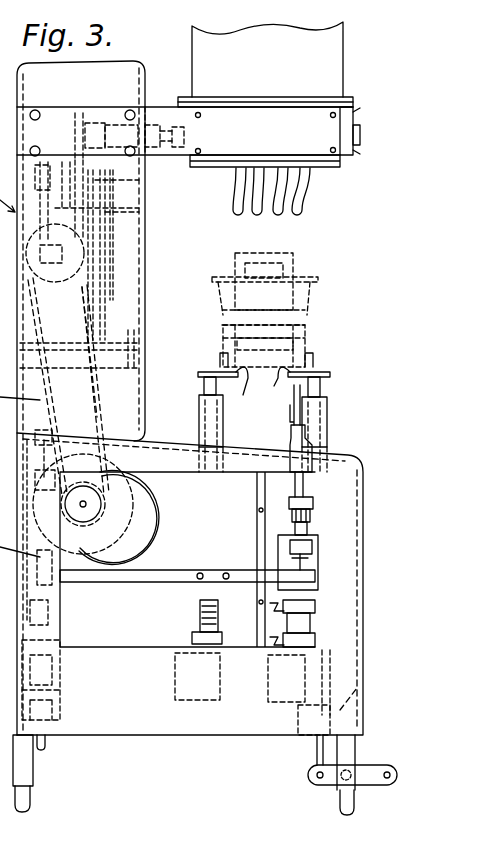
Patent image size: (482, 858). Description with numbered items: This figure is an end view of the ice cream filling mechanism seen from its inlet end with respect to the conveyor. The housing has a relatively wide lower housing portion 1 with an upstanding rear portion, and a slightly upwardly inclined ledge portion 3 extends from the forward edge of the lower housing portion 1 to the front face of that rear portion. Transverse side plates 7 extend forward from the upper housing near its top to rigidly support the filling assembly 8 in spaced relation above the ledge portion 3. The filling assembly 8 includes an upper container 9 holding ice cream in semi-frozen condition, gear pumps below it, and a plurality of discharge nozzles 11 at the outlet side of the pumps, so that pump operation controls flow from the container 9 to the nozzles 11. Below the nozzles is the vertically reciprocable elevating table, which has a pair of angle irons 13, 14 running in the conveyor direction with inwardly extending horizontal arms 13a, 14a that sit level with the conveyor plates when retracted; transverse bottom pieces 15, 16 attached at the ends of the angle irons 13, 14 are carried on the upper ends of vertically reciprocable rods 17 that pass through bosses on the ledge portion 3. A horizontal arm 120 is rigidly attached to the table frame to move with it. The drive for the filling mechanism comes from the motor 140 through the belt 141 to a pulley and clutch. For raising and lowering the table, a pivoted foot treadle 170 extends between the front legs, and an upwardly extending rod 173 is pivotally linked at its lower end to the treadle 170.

The lower housing portion 1 is at (102, 726).
The ledge portion 3 is at (170, 440).
The transverse side plates 7 is at (152, 112).
The filling assembly 8 is at (351, 180).
The upper container 9 is at (327, 53).
The discharge nozzles 11 is at (310, 203).
The angle iron 13 is at (311, 366).
The angle iron arm 13a is at (279, 381).
The angle iron 14 is at (218, 366).
The angle iron arm 14a is at (252, 389).
The bottom piece 15 is at (328, 375).
The bottom piece 16 is at (199, 374).
The vertically reciprocable rods 17 is at (203, 385).
The horizontal arm 120 is at (130, 580).
The motor 140 is at (118, 518).
The belt 141 is at (95, 400).
The foot treadle 170 is at (373, 778).
The rod 173 is at (318, 750).